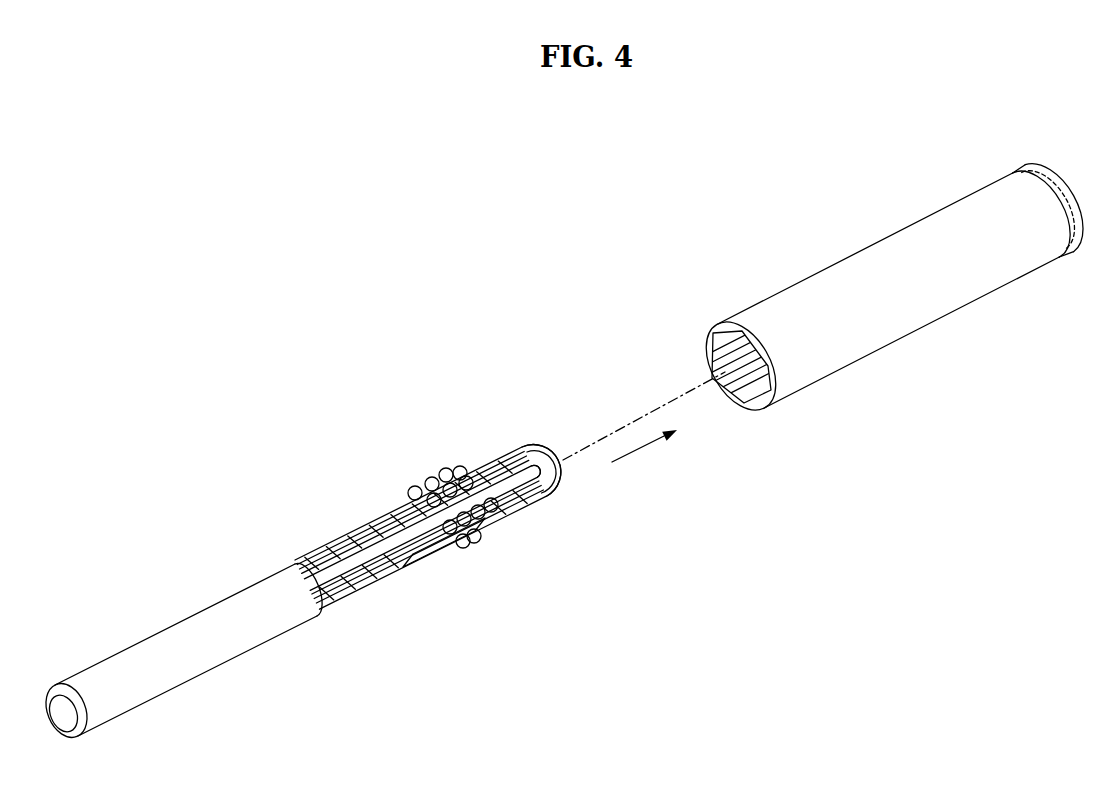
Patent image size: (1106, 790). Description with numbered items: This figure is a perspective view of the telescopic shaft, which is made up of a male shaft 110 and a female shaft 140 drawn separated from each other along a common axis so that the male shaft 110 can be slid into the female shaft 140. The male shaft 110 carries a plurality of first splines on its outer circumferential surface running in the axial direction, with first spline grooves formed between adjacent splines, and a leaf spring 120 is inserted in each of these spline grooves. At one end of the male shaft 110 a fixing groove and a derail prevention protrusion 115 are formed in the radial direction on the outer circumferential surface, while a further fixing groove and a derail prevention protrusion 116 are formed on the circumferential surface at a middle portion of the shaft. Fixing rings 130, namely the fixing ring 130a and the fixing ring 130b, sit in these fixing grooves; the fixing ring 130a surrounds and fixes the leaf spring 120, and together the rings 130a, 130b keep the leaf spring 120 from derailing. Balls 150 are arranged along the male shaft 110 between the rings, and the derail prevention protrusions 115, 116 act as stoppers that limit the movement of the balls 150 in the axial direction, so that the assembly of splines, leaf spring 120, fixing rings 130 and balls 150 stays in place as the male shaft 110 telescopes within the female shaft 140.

The male shaft 110 is at (171, 586).
The derail prevention protrusion 115 is at (558, 493).
The derail prevention protrusion 116 is at (313, 617).
The leaf spring 120 is at (413, 557).
The fixing rings 130 is at (463, 350).
The fixing ring 130a is at (517, 447).
The fixing ring 130b is at (288, 563).
The female shaft 140 is at (849, 238).
The balls 150 is at (497, 530).